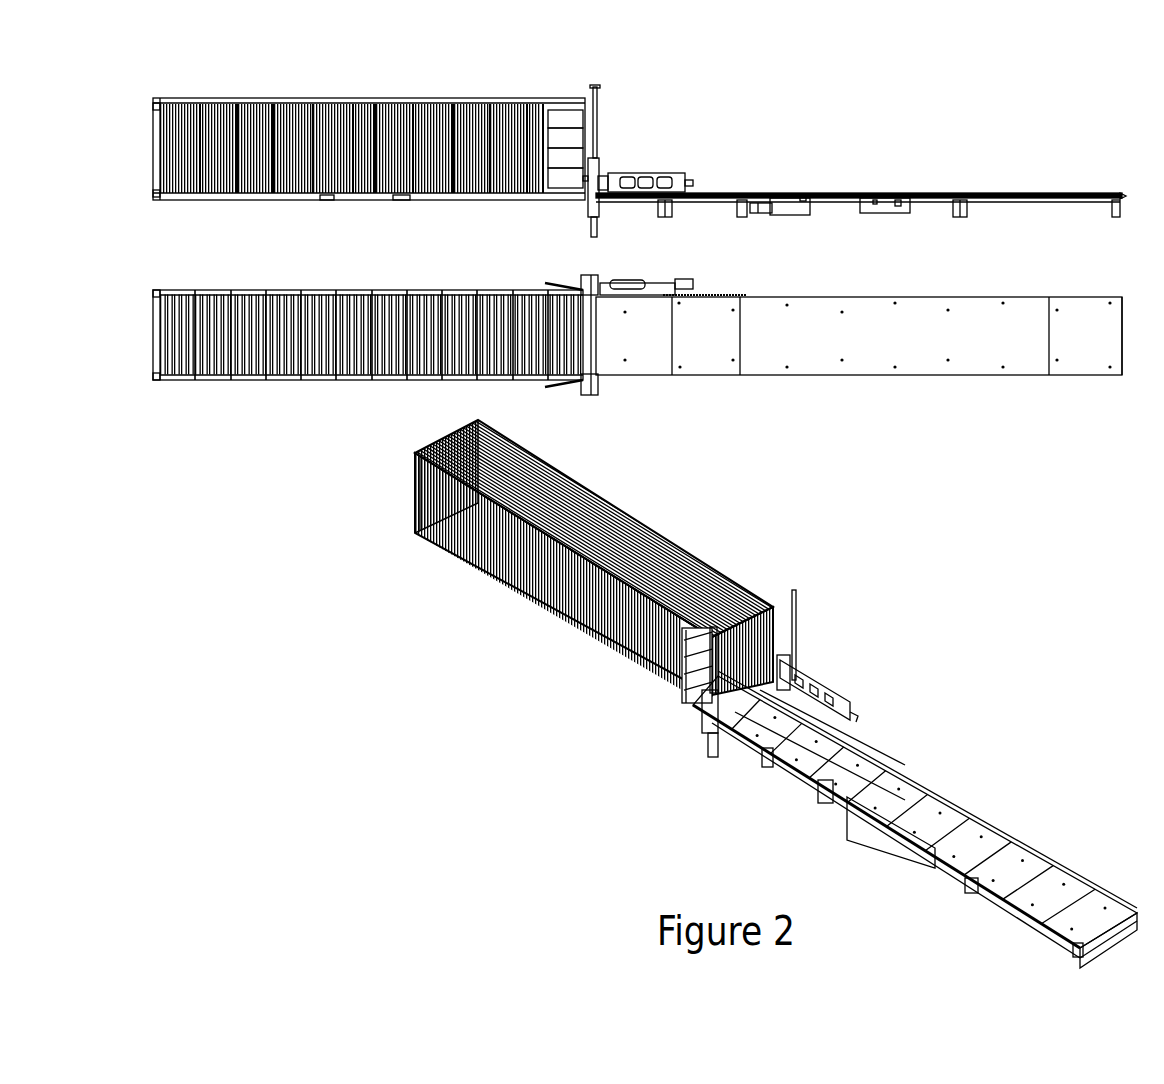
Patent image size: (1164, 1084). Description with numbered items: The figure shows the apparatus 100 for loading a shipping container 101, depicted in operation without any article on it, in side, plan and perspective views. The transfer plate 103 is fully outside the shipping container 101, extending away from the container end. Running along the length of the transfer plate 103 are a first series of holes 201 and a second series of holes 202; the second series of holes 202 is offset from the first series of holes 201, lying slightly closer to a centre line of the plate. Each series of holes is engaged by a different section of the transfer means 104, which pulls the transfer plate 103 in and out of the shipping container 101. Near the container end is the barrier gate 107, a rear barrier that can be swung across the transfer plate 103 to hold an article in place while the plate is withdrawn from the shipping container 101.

The apparatus 100 is at (1057, 118).
The shipping container 101 is at (348, 100).
The transfer plate 103 is at (880, 775).
The transfer means 104 is at (743, 197).
The barrier gate 107 is at (648, 170).
The first series of holes 201 is at (948, 360).
The second series of holes 202 is at (1108, 366).